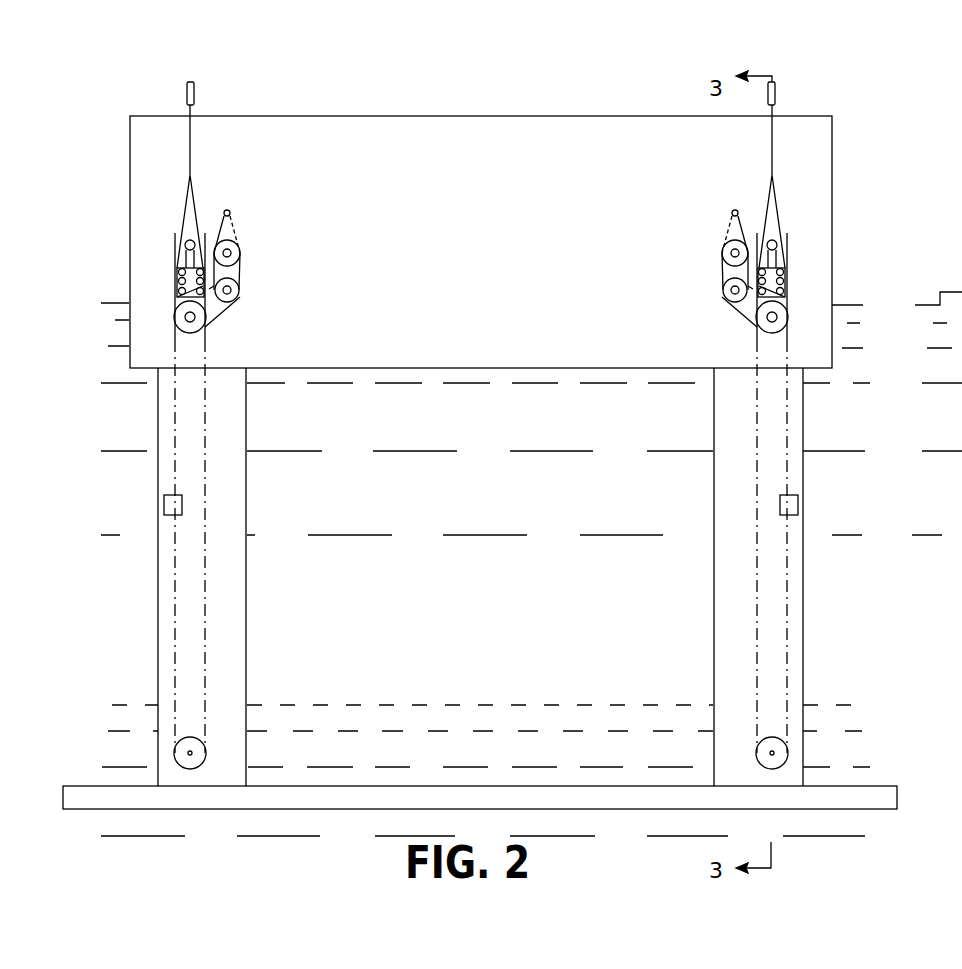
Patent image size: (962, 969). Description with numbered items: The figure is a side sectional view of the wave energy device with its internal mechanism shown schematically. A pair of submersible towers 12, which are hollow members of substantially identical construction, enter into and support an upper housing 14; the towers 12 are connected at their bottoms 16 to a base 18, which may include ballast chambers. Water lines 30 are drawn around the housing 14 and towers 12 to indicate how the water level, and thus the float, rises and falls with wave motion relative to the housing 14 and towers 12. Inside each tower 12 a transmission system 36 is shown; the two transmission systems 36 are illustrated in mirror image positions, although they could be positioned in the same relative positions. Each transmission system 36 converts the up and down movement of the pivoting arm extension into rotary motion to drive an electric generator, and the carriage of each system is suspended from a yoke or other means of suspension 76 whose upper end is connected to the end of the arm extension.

The submersible towers 12 is at (240, 572).
The upper housing 14 is at (832, 185).
The bottoms 16 is at (238, 768).
The base 18 is at (885, 797).
The water lines 30 is at (848, 305).
The transmission system 36 is at (264, 279).
The yoke or other means of suspension 76 is at (791, 284).